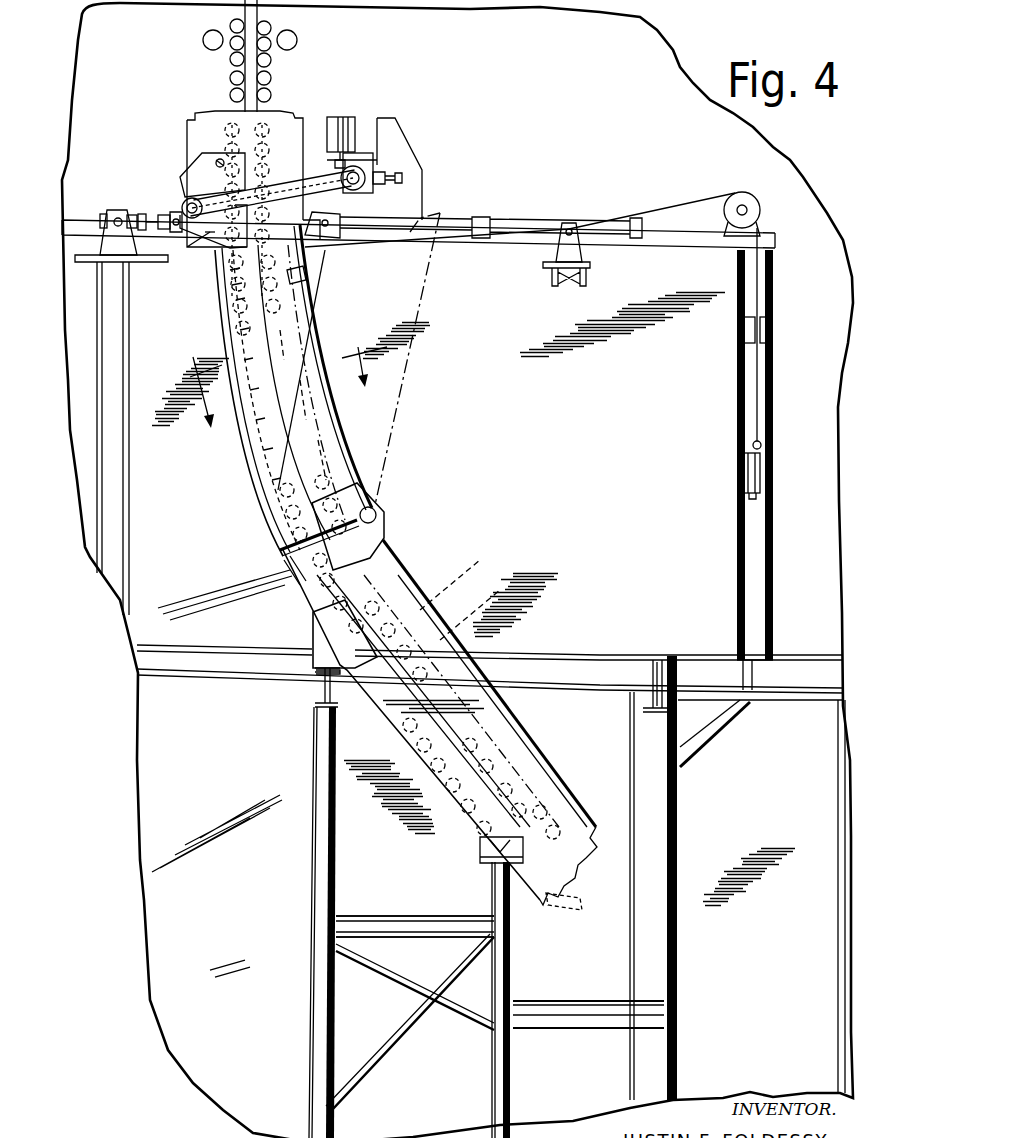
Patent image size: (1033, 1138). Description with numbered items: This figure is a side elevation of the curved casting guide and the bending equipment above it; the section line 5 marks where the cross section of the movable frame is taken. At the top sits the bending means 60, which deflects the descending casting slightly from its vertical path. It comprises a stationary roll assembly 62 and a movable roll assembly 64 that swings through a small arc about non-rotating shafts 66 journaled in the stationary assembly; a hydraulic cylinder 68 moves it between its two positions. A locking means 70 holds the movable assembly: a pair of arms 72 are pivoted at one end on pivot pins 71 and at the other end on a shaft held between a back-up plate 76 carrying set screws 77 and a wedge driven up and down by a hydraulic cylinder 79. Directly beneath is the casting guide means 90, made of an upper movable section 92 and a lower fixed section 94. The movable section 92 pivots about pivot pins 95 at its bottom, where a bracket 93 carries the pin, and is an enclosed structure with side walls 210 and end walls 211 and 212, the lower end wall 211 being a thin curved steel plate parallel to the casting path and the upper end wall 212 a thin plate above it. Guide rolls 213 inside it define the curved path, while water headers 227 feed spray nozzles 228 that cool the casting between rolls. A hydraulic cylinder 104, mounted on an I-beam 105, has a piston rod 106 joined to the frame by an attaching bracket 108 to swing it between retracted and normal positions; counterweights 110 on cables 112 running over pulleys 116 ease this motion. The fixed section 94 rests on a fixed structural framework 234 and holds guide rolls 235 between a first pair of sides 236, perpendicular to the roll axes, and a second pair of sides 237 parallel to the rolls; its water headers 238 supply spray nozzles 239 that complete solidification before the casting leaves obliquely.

The section line 5- 5 is at (288, 405).
The bending means 60 is at (178, 212).
The stationary roll assembly 62 is at (230, 112).
The movable roll assembly 64 is at (190, 230).
The non-rotating shafts 66 is at (210, 160).
The hydraulic cylinder 68 is at (110, 210).
The locking means 70 is at (358, 110).
The pivot pins 71 is at (210, 238).
The arms 72 is at (185, 198).
The back-up plate 76 is at (403, 180).
The set screws 77 is at (380, 172).
The hydraulic cylinder 79 is at (340, 116).
The casting guide means 90 is at (394, 522).
The upper movable section 92 is at (325, 425).
The pivot bracket 93 is at (366, 522).
The lower fixed section 94 is at (446, 725).
The pivot pins 95 is at (378, 524).
The hydraulic cylinder 104 is at (510, 232).
The I-beam 105 is at (553, 270).
The piston rod 106 is at (449, 228).
The attaching bracket 108 is at (323, 232).
The counterweights 110 is at (743, 470).
The cables 112 is at (690, 205).
The pulleys 116 is at (738, 200).
The side walls 210 is at (303, 390).
The lower end wall 211 is at (252, 474).
The upper end wall 212 is at (345, 450).
The guide rolls 213 is at (300, 290).
The water headers 227 is at (230, 328).
The spray nozzles 228 is at (222, 305).
The fixed structural framework 234 is at (430, 890).
The guide rolls 235 is at (545, 783).
The first pair of sides 236 is at (516, 720).
The second pair of sides 237 is at (393, 724).
The water headers 238 is at (313, 600).
The spray nozzles 239 is at (288, 575).